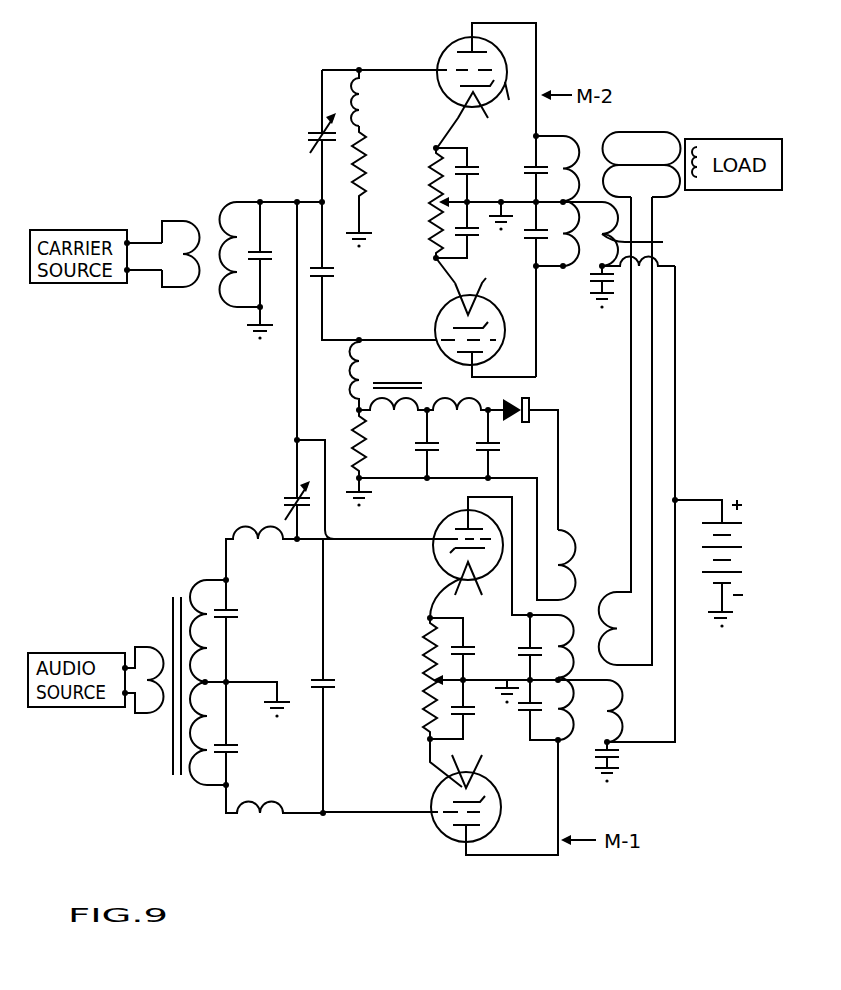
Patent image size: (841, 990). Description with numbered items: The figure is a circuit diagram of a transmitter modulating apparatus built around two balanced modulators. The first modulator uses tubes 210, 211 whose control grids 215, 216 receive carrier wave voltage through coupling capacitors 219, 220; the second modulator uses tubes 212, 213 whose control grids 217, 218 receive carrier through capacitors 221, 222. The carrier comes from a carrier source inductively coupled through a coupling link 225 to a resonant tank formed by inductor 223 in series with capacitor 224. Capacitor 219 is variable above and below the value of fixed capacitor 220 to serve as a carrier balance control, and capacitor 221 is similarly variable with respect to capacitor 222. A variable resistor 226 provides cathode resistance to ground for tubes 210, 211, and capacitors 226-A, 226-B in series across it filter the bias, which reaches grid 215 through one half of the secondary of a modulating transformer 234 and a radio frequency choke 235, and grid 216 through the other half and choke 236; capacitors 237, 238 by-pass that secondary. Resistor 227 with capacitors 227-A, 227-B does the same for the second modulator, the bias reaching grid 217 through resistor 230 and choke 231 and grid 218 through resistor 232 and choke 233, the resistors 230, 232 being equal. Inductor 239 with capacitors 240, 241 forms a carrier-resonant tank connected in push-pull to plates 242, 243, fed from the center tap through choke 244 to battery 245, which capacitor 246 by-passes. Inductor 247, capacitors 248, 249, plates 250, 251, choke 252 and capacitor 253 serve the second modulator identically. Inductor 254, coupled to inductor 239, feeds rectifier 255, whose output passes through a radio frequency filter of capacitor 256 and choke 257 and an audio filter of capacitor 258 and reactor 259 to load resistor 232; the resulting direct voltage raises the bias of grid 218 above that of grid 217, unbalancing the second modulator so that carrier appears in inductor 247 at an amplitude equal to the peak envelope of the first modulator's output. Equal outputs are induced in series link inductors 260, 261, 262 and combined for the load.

The tube 210 is at (437, 525).
The tube 211 is at (495, 790).
The tube 212 is at (495, 105).
The tube 213 is at (515, 293).
The control grid 215 is at (440, 550).
The control grid 216 is at (482, 813).
The control grid 217 is at (448, 50).
The control grid 218 is at (448, 322).
The coupling capacitor 219 is at (291, 496).
The coupling capacitor 220 is at (328, 677).
The capacitor 221 is at (308, 137).
The capacitor 222 is at (333, 276).
The inductor 223 is at (217, 215).
The capacitor 224 is at (253, 247).
The coupling link 225 is at (183, 288).
The variable resistor 226 is at (425, 703).
The capacitor 226-A is at (467, 648).
The capacitor 226-B is at (482, 710).
The resistor 227 is at (432, 190).
The capacitor 227-A is at (470, 168).
The capacitor 227-B is at (470, 237).
The resistor 230 is at (383, 179).
The radio frequency choke 231 is at (378, 101).
The resistor 232 is at (368, 450).
The radio frequency choke 233 is at (350, 380).
The modulating transformer 234 is at (173, 619).
The radio frequency choke 235 is at (257, 540).
The radio frequency choke 236 is at (243, 818).
The capacitor 237 is at (247, 617).
The capacitor 238 is at (233, 753).
The inductor 239 is at (566, 745).
The capacitor 240 is at (532, 712).
The capacitor 241 is at (523, 658).
The plate 242 is at (460, 840).
The plate 243 is at (458, 505).
The radio frequency choke 244 is at (637, 703).
The battery 245 is at (733, 557).
The capacitor 246 is at (617, 757).
The inductor 247 is at (592, 128).
The capacitor 248 is at (540, 242).
The capacitor 249 is at (530, 177).
The plate 250 is at (480, 352).
The plate 251 is at (467, 47).
The radio frequency choke 252 is at (651, 234).
The capacitor 253 is at (595, 283).
The inductor 254 is at (573, 562).
The rectifier 255 is at (535, 400).
The capacitor 256 is at (497, 450).
The radio frequency choke 257 is at (445, 405).
The capacitor 258 is at (435, 452).
The reactor 259 is at (418, 392).
The link inductor 260 is at (604, 614).
The link inductor 261 is at (608, 158).
The link inductor 262 is at (676, 196).